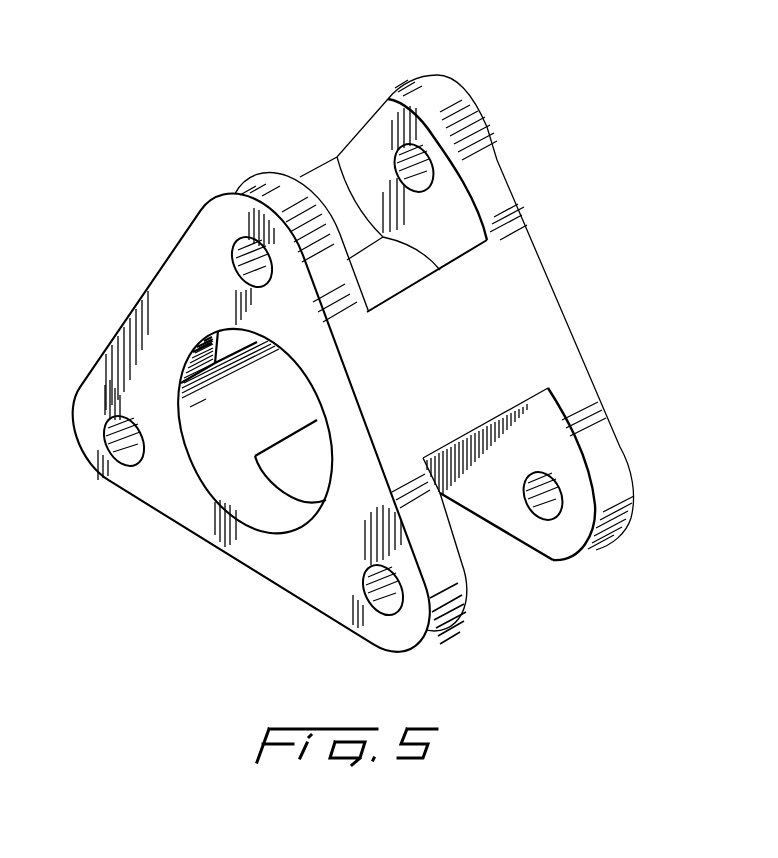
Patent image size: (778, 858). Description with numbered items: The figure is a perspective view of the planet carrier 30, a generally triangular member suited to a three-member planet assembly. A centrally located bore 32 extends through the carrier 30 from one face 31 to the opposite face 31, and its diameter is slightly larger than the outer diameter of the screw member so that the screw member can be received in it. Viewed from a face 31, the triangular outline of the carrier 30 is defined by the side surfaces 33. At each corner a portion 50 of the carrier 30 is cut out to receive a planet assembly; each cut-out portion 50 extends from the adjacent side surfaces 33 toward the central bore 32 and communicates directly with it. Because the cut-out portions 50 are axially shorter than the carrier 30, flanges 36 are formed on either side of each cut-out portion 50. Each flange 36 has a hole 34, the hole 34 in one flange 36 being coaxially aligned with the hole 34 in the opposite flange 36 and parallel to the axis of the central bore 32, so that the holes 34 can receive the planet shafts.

The planet carrier 30 is at (560, 236).
The face 31 is at (557, 290).
The central bore 32 is at (242, 430).
The side surface 33 is at (115, 338).
The hole 34 is at (423, 167).
The flange 36 is at (432, 93).
The cut-out portion 50 is at (318, 150).